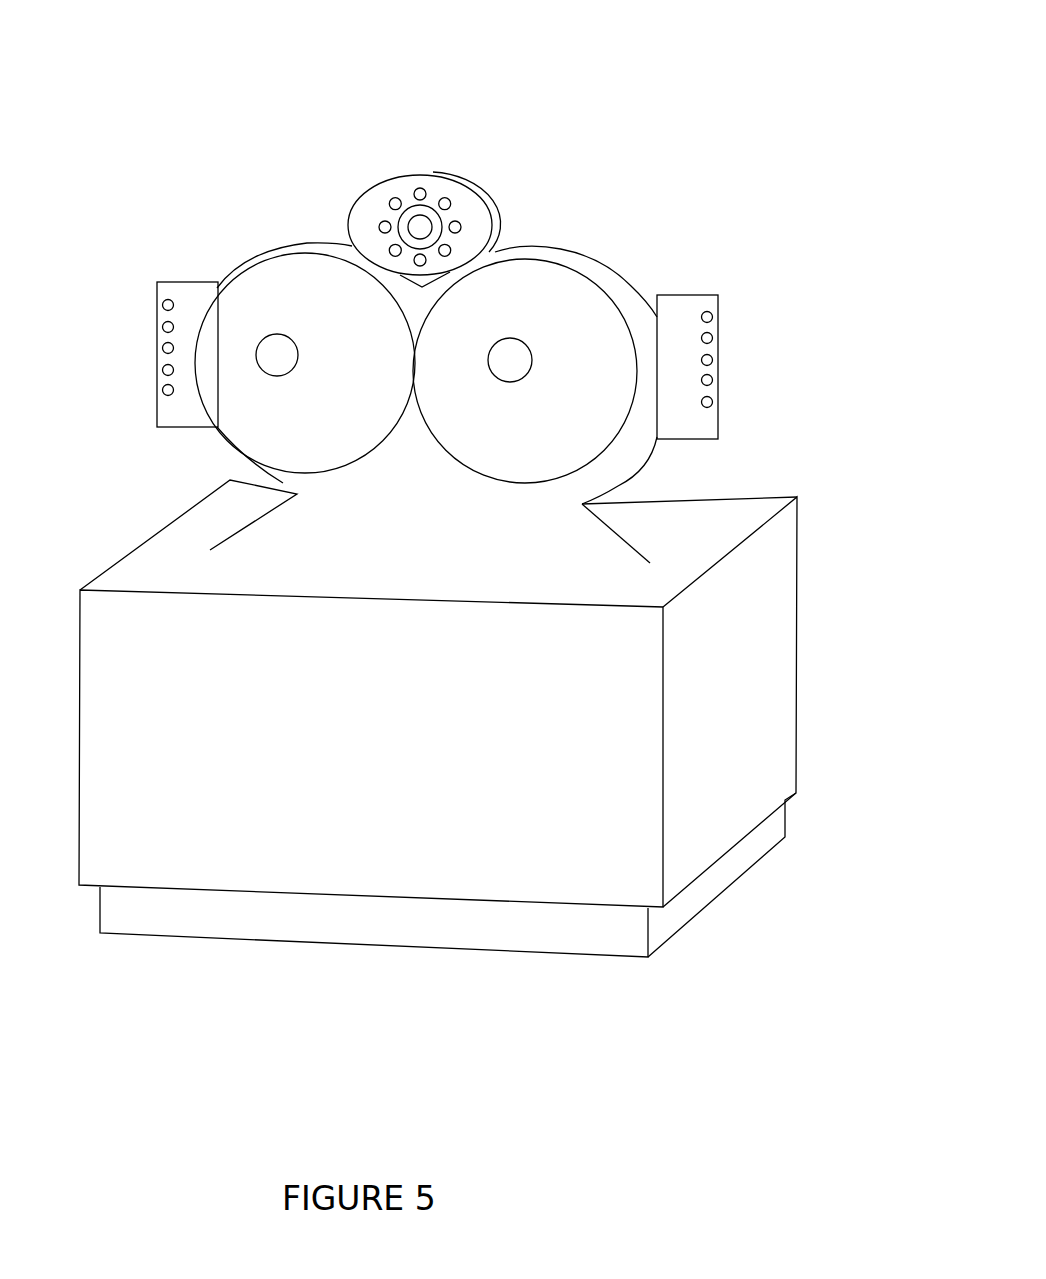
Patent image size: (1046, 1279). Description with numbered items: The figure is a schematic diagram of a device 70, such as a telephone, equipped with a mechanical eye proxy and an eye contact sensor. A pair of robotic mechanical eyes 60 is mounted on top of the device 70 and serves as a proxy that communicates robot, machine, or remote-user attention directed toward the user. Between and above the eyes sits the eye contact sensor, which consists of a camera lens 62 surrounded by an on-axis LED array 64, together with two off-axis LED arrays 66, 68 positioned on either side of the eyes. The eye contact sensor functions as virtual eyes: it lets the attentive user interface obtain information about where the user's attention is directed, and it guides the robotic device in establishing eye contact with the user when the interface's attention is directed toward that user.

The robotic mechanical eyes 60 is at (532, 287).
The camera lens 62 is at (412, 218).
The on-axis LED array 64 is at (422, 173).
The off-axis LED array 66 is at (168, 303).
The off-axis LED array 68 is at (710, 310).
The device 70 is at (770, 615).